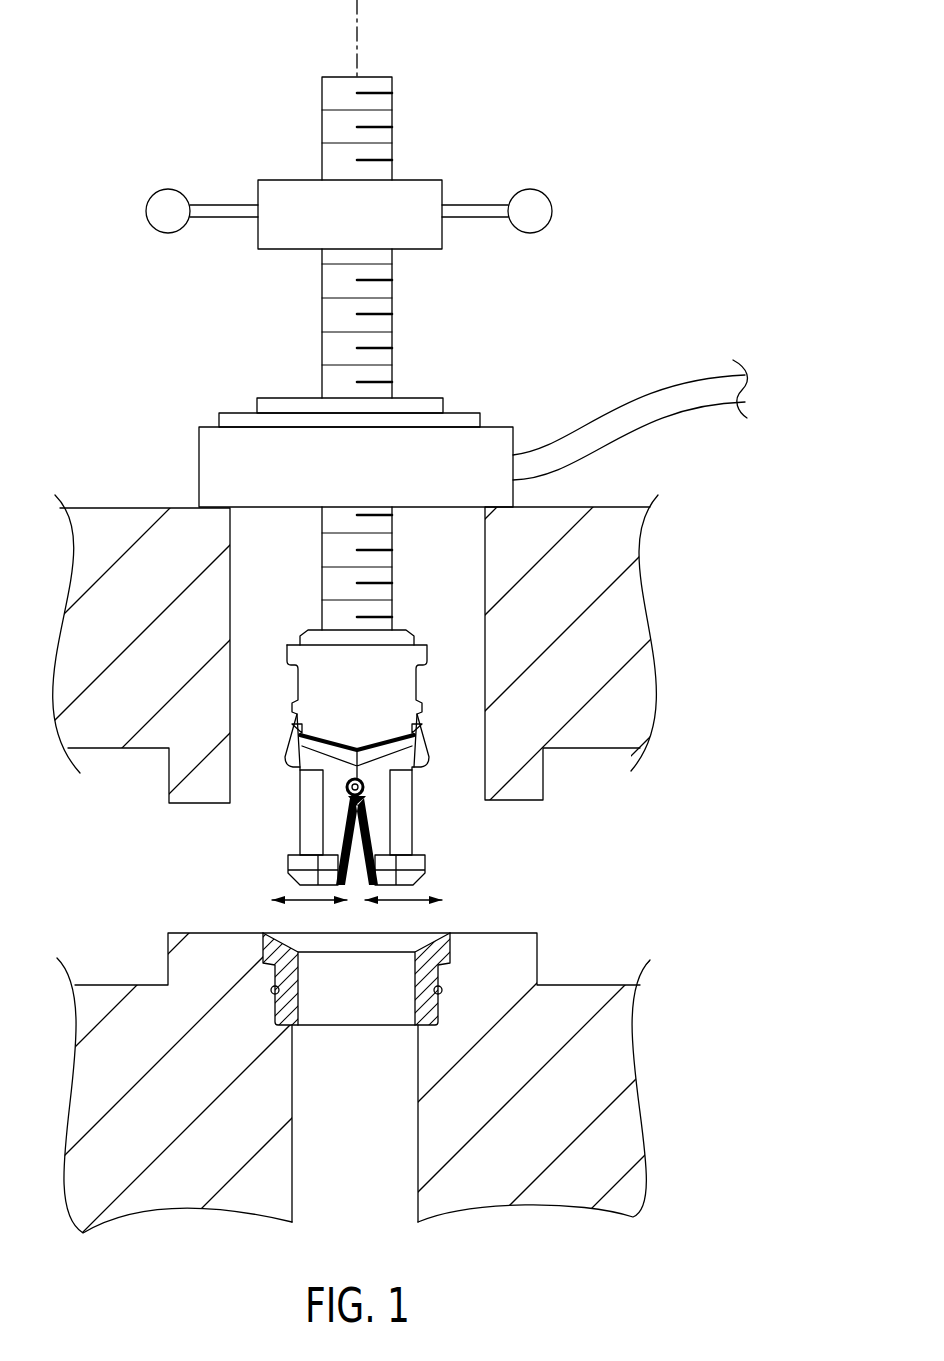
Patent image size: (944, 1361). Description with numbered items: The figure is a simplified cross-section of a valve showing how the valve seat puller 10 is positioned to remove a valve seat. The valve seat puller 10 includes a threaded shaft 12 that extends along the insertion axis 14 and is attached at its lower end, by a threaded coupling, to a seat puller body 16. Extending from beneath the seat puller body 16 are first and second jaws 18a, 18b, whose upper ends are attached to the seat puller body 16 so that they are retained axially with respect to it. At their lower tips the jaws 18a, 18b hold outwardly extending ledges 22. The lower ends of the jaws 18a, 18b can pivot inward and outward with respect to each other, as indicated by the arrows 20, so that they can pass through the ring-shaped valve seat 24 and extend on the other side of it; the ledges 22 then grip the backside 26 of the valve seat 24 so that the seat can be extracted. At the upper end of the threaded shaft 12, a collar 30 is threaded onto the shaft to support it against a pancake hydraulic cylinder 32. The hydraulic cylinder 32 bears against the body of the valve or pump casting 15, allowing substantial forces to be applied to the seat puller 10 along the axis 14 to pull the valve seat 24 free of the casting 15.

The valve seat puller 10 is at (447, 465).
The threaded shaft 12 is at (322, 127).
The insertion axis 14 is at (358, 33).
The valve or pump casting 15 is at (624, 620).
The seat puller body 16 is at (310, 692).
The first jaw 18a is at (307, 823).
The second jaw 18b is at (407, 823).
The arrows 20 is at (308, 902).
The ledges 22 is at (288, 856).
The valve seat 24 is at (415, 990).
The backside 26 is at (297, 1025).
The collar 30 is at (420, 187).
The pancake hydraulic cylinder 32 is at (493, 436).